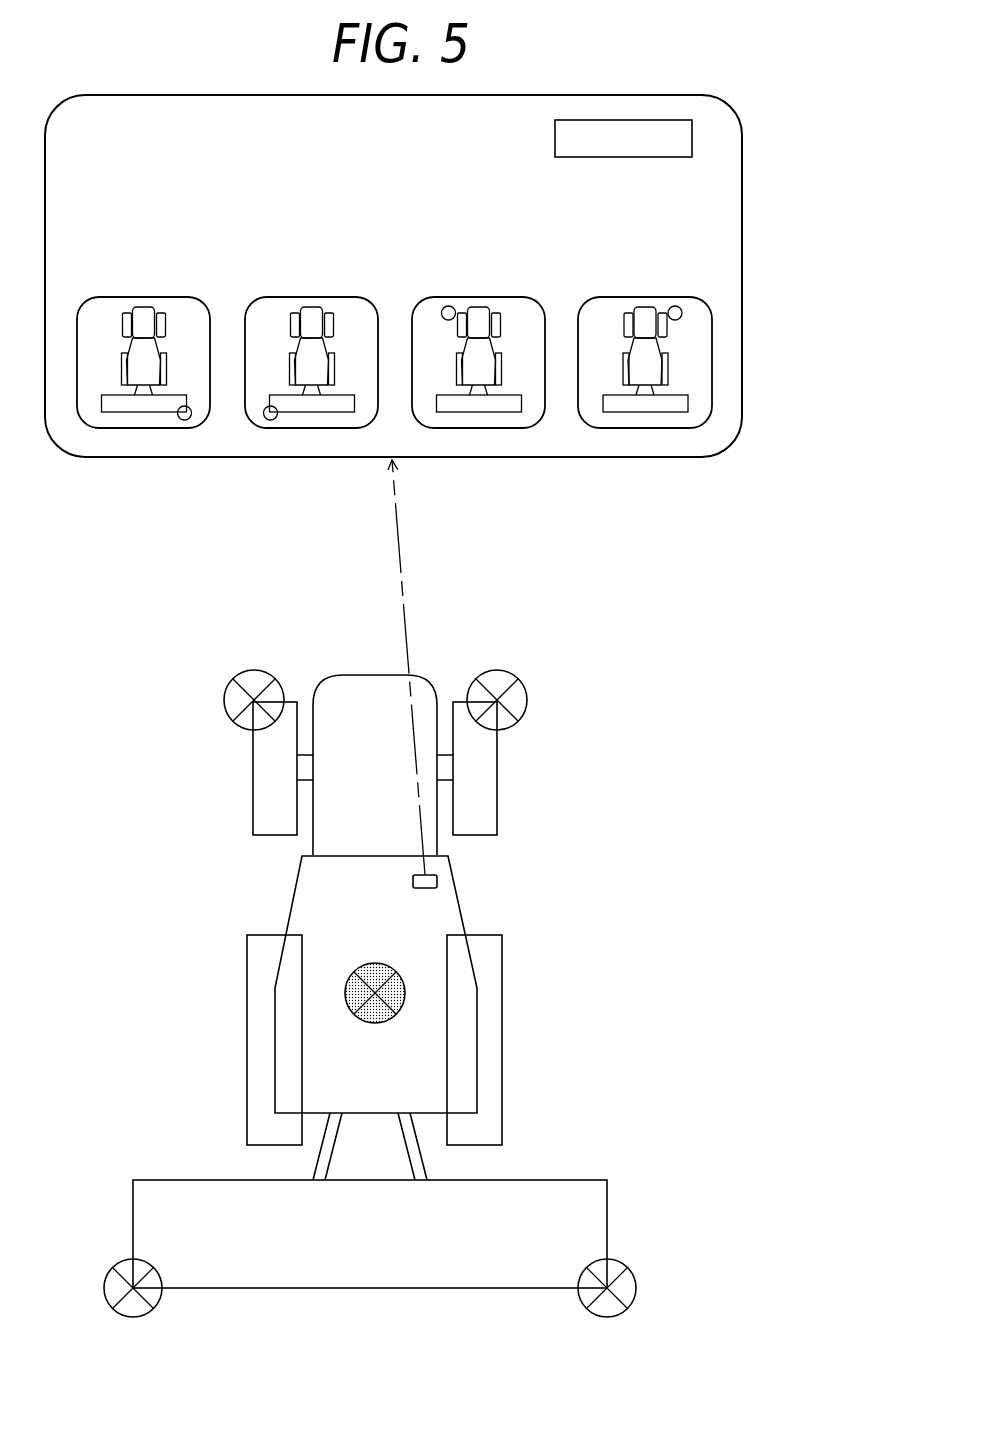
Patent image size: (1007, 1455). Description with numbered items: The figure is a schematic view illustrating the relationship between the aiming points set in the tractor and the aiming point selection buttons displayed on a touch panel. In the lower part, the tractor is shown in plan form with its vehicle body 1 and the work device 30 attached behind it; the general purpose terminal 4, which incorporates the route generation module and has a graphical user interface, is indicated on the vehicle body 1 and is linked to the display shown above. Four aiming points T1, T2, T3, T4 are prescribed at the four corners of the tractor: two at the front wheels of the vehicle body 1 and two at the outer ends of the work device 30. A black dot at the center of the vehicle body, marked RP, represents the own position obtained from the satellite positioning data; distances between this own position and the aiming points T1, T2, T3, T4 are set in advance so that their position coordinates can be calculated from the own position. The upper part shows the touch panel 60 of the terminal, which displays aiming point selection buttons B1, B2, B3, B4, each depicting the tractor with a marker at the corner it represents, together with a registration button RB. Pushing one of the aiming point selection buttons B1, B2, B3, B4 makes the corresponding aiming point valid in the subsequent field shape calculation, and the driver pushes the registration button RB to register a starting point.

The touch panel 60 is at (546, 92).
The registration button RB is at (692, 138).
The aiming point selection button B1 is at (644, 292).
The aiming point selection button B2 is at (477, 292).
The aiming point selection button B3 is at (311, 292).
The aiming point selection button B4 is at (143, 292).
The vehicle body 1 is at (457, 903).
The general purpose terminal 4 is at (410, 881).
The reference position RP is at (383, 1022).
The aiming point T1 is at (527, 700).
The aiming point T2 is at (224, 700).
The aiming point T3 is at (104, 1288).
The aiming point T4 is at (636, 1288).
The work device 30 is at (370, 1290).